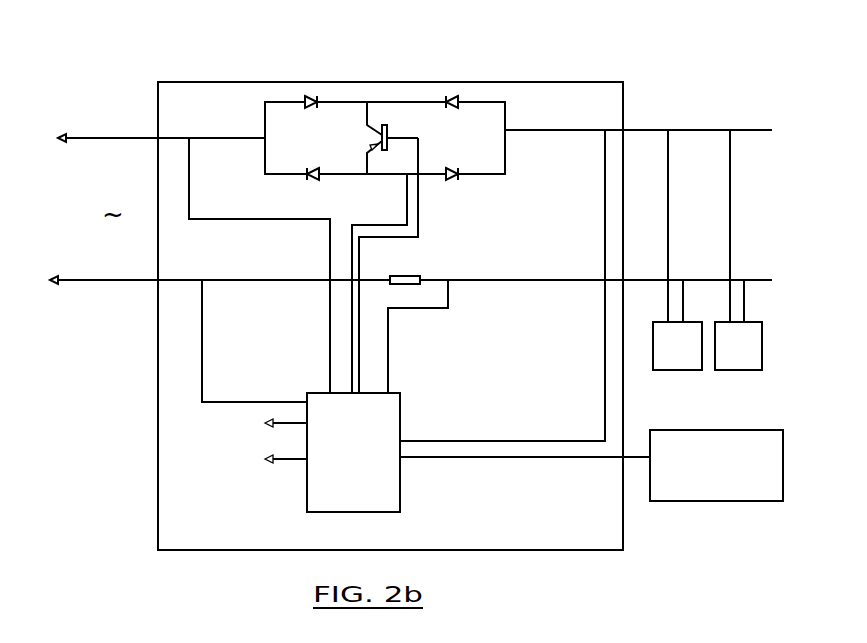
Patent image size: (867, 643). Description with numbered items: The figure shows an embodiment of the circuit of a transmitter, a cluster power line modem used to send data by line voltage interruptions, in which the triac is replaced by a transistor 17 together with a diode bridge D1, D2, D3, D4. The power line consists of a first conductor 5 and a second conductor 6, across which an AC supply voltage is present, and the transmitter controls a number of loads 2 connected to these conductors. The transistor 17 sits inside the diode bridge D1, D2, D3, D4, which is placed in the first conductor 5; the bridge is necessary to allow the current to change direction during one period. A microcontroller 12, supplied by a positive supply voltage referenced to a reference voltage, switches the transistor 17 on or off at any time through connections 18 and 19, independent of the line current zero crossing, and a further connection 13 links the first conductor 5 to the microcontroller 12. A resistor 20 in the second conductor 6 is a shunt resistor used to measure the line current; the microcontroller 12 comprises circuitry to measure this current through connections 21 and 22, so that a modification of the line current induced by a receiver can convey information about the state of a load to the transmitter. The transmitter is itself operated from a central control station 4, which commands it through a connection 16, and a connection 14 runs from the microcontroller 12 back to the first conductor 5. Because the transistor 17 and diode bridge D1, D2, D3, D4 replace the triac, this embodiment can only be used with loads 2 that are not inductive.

The loads 2 is at (680, 347).
The central control station 4 is at (717, 482).
The first conductor 5 is at (105, 135).
The second conductor 6 is at (100, 278).
The microcontroller 12 is at (352, 465).
The connection line 13 is at (247, 220).
The connection line 14 is at (498, 439).
The connection 16 is at (533, 459).
The transistor 17 is at (375, 138).
The connection 18 is at (419, 228).
The connection 19 is at (385, 227).
The resistor 20 is at (415, 272).
The connection 21 is at (427, 313).
The connection 22 is at (248, 400).
The diode D1 is at (313, 85).
The diode D2 is at (463, 85).
The diode D3 is at (317, 182).
The diode D4 is at (462, 182).